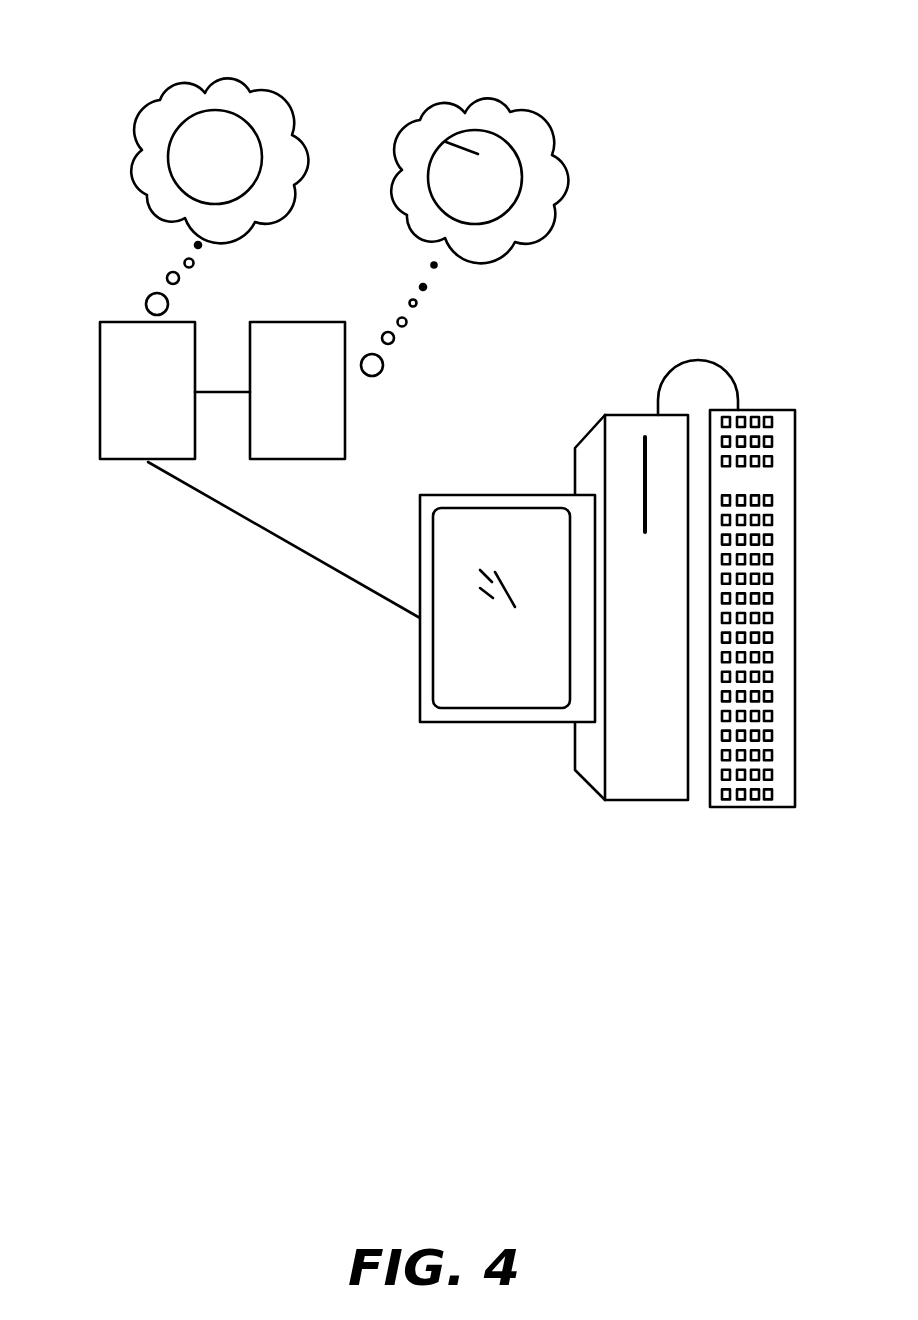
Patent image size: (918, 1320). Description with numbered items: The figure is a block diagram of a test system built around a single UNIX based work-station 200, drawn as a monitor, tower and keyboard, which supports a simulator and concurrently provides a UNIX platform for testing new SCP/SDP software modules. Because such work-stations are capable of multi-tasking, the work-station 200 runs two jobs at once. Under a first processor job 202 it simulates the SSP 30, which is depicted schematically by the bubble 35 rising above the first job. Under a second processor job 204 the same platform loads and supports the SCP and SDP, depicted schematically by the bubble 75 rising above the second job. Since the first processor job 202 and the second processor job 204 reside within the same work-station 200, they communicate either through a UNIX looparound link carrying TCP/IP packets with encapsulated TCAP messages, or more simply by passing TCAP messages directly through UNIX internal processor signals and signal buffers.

The SSP 30 is at (167, 163).
The bubble 35 is at (152, 97).
The bubble 75 is at (467, 118).
The work-station 200 is at (638, 800).
The first processor job 202 is at (98, 447).
The second processor job 204 is at (307, 320).